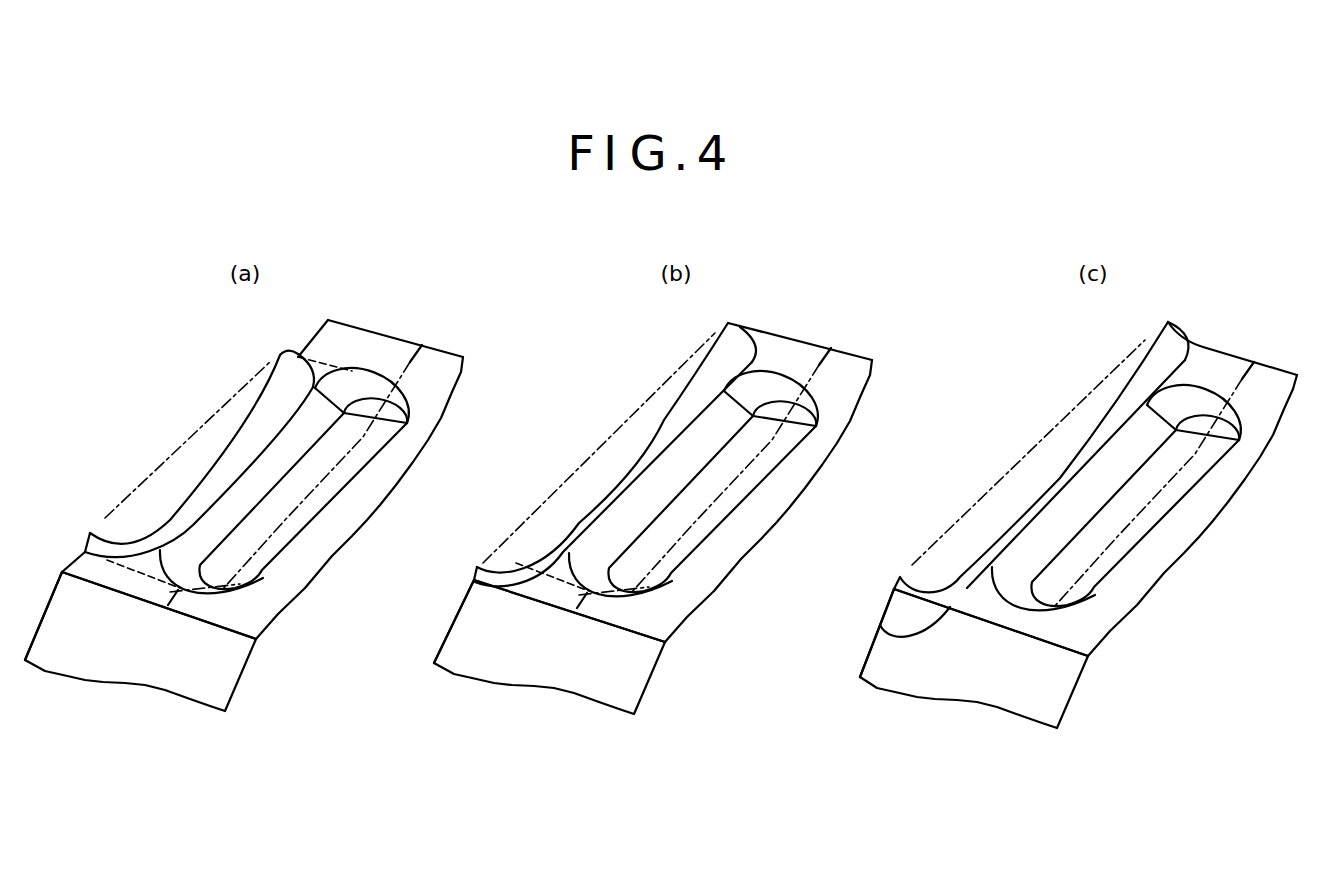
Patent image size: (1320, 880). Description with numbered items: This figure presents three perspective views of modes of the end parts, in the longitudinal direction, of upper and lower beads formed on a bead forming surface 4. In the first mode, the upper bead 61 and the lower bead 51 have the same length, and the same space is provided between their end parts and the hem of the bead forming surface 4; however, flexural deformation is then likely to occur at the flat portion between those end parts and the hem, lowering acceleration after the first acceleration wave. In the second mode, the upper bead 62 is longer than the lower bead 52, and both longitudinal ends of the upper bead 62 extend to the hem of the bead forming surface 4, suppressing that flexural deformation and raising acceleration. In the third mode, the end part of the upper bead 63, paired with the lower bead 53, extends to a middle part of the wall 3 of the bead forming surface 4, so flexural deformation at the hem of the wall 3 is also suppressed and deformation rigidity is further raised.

The wall 3 is at (1008, 685).
The bead forming surface 4 is at (142, 587).
The lower bead 51 is at (283, 537).
The lower bead 52 is at (690, 538).
The lower bead 53 is at (1110, 552).
The upper bead 61 is at (182, 485).
The upper bead 62 is at (590, 488).
The upper bead 63 is at (1015, 500).